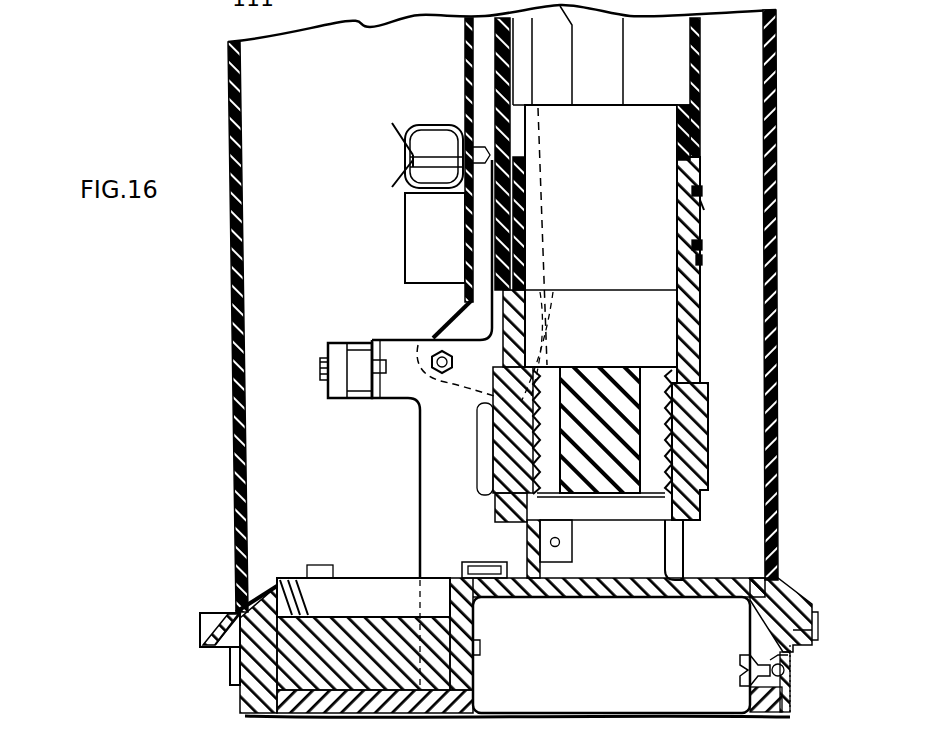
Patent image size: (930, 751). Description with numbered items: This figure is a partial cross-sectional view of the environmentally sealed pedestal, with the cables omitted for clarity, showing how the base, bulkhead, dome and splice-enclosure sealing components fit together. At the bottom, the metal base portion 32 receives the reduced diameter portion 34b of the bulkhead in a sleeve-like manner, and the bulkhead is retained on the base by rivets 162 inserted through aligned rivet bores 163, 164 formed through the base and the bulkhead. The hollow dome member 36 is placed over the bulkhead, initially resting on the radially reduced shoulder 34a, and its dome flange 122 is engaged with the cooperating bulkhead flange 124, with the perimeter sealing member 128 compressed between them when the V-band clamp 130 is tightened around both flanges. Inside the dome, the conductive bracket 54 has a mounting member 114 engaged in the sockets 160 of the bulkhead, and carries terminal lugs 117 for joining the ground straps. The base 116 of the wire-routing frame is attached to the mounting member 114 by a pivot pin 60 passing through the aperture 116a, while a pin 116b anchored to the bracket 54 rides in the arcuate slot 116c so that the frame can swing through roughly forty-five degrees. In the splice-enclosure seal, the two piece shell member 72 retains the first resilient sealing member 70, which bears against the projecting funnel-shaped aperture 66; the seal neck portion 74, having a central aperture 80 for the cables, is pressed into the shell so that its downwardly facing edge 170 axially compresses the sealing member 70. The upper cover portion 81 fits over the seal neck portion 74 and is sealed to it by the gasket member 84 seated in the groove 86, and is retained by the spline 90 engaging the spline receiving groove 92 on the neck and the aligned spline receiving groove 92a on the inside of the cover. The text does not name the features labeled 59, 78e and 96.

The base portion 32 is at (240, 675).
The radially reduced shoulder 34a is at (775, 600).
The reduced diameter portion 34b is at (790, 708).
The dome member 36 is at (234, 368).
The bracket 54 is at (420, 490).
The chamber 59 is at (476, 688).
The pivot pin 60 is at (437, 352).
The funnel-shaped aperture 66 is at (690, 540).
The first resilient sealing member 70 is at (606, 388).
The two piece shell member 72 is at (706, 452).
The seal neck portion 74 is at (704, 308).
The thread 78e is at (694, 428).
The central aperture 80 is at (680, 125).
The upper sleeve or cover portion 81 is at (700, 45).
The gasket member 84 is at (704, 212).
The groove 86 is at (702, 191).
The spline 90 is at (702, 245).
The spline receiving groove 92 is at (692, 258).
The spline receiving groove 92a is at (702, 262).
The block 96 is at (338, 645).
The mounting member 114 is at (432, 585).
The base 116 is at (466, 323).
The aperture 116a is at (457, 384).
The pin 116b is at (545, 297).
The arcuate slot 116c is at (530, 330).
The terminal lugs 117 is at (315, 368).
The dome flange 122 is at (222, 620).
The bulkhead flange 124 is at (230, 660).
The perimeter sealing member 128 is at (232, 618).
The V-band clamp 130 is at (200, 630).
The sockets 160 is at (480, 653).
The rivets 162 is at (784, 675).
The rivet bore 163 is at (786, 658).
The rivet bore 164 is at (738, 660).
The downwardly facing edge 170 is at (700, 397).